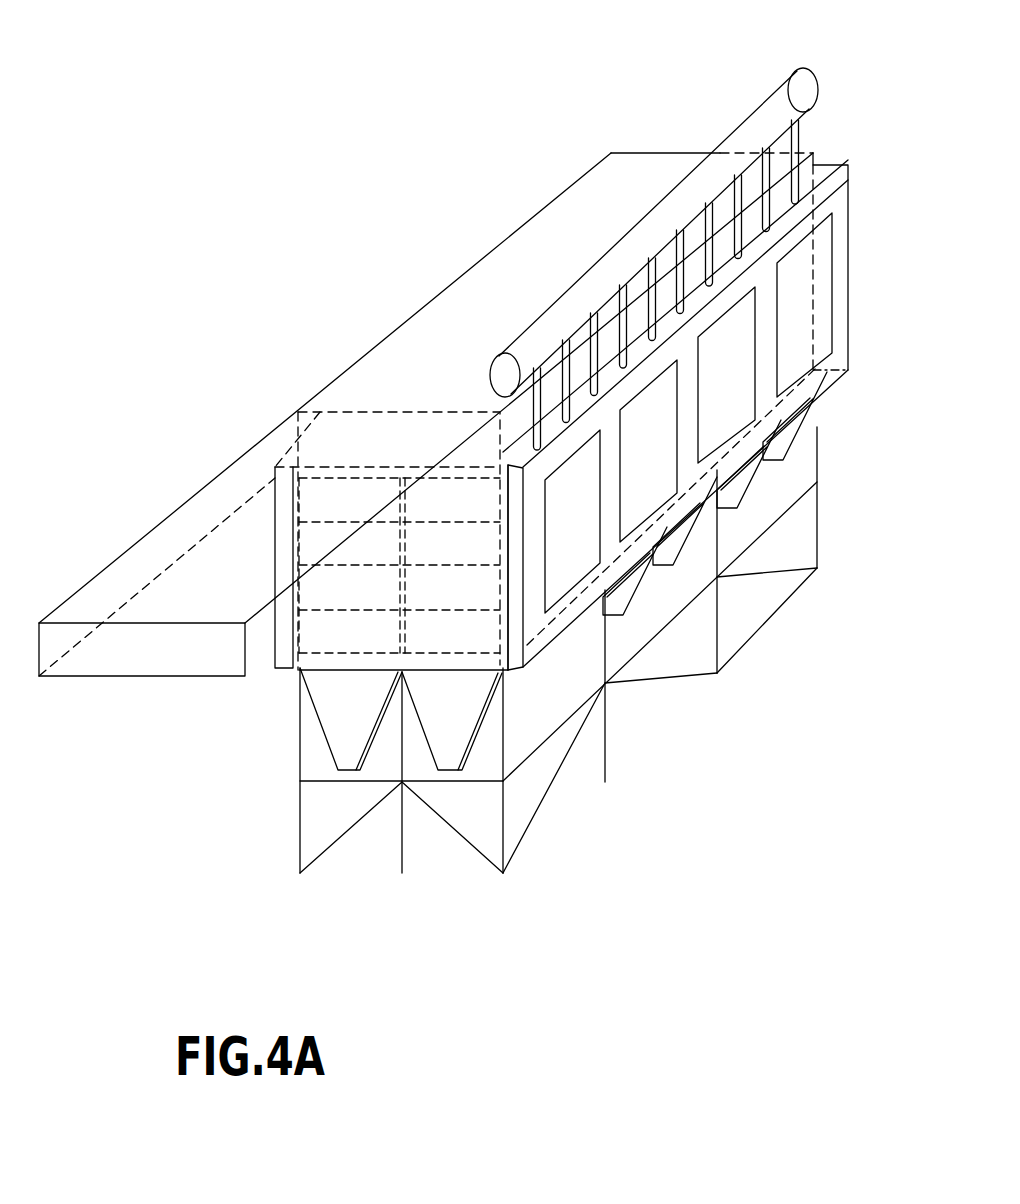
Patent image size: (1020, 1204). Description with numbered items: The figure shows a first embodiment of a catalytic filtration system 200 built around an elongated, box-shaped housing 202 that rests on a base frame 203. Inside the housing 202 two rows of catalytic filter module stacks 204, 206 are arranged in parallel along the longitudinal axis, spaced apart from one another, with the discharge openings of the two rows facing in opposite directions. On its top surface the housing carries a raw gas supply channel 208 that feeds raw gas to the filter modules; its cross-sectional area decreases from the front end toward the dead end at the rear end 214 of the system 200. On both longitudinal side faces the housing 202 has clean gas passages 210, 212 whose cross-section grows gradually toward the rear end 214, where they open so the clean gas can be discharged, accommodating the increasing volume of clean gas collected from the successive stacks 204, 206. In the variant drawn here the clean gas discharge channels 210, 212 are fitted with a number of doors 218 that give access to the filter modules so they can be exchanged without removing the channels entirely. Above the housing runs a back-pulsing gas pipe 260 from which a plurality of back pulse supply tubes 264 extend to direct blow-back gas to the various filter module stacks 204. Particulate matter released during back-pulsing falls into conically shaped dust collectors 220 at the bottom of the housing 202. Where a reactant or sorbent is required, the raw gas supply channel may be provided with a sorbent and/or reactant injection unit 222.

The catalytic filtration system 200 is at (332, 280).
The housing 202 is at (309, 604).
The base frame 203 is at (608, 720).
The catalytic filter module stack 204 is at (445, 627).
The catalytic filter module stack 206 is at (330, 537).
The raw gas supply channel 208 is at (684, 357).
The clean gas passage 210 is at (768, 363).
The clean gas passage 212 is at (287, 508).
The rear end 214 is at (862, 148).
The doors 218 is at (590, 525).
The dust collector 220 is at (345, 722).
The sorbent and/or reactant injection unit 222 is at (130, 580).
The back-pulsing gas pipe 260 is at (757, 137).
The back pulse supply tube 264 is at (672, 240).